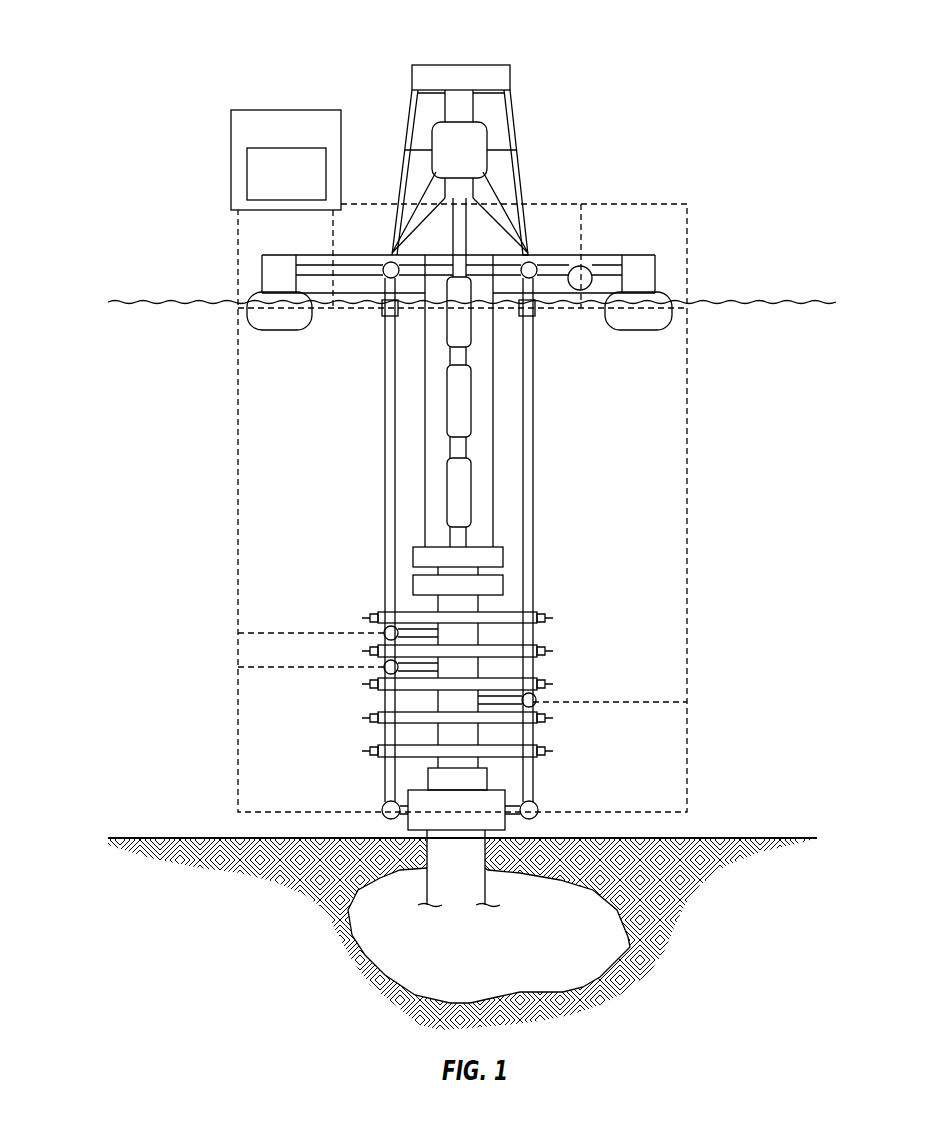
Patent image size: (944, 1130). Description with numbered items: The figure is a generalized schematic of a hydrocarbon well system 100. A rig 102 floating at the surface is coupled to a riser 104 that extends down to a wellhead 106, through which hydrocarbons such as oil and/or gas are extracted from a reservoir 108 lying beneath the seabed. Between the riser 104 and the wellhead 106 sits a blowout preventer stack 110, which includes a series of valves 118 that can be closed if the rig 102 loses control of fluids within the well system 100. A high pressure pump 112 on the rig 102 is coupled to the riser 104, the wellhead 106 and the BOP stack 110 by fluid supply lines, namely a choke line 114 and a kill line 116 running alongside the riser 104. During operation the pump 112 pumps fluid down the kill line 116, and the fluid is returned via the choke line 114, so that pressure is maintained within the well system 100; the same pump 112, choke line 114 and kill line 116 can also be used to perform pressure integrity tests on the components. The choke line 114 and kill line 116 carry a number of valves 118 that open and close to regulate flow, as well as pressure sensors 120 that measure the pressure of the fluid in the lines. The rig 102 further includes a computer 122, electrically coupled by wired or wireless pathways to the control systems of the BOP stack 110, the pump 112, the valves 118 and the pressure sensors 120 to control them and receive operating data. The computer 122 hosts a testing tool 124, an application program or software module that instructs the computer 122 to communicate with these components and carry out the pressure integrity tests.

The well system 100 is at (210, 42).
The rig 102 is at (620, 170).
The riser 104 is at (493, 416).
The wellhead 106 is at (476, 822).
The reservoir 108 is at (511, 976).
The blowout preventer stack 110 is at (572, 662).
The high pressure pump 112 is at (592, 268).
The choke line 114 is at (533, 485).
The kill line 116 is at (385, 485).
The valves 118 is at (383, 268).
The pressure sensors 120 is at (385, 318).
The computer 122 is at (243, 112).
The testing tool 124 is at (247, 176).